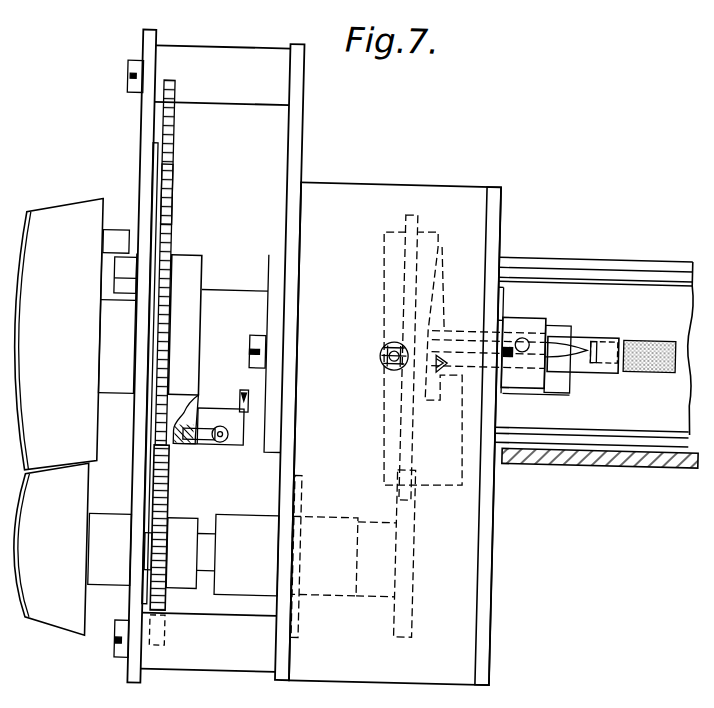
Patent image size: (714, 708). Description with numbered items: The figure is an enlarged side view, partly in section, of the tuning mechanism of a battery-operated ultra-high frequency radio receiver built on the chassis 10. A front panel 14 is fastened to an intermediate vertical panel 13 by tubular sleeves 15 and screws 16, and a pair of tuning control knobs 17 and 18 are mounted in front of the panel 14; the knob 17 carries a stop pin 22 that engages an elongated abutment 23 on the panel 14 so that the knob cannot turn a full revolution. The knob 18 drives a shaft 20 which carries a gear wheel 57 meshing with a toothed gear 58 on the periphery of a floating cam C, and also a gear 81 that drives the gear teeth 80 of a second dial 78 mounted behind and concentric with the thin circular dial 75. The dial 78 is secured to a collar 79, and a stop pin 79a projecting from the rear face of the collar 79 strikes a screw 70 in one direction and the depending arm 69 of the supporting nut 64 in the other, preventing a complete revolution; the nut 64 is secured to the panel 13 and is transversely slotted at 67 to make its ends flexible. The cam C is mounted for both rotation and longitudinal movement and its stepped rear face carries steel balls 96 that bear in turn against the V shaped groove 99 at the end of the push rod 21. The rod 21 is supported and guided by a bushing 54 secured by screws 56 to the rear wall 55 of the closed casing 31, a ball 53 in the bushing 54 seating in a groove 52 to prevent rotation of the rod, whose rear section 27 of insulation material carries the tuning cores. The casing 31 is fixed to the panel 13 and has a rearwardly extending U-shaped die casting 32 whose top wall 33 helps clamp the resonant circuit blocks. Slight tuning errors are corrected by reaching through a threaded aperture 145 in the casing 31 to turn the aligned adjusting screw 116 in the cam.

The chassis 10 is at (577, 448).
The intermediate vertical panel 13 is at (302, 138).
The front panel 14 is at (146, 154).
The tubular sleeve 15 is at (213, 50).
The screw 16 is at (131, 63).
The tuning control knob 17 is at (54, 211).
The tuning control knob 18 is at (63, 621).
The shaft 20 is at (218, 560).
The push rod 21 is at (592, 356).
The stop pin 22 is at (120, 235).
The elongated abutment 23 is at (125, 267).
The rear section of the rod 27 is at (649, 329).
The closed casing 31 is at (430, 180).
The die casting 32 is at (575, 244).
The top wall 33 is at (638, 251).
The groove 52 is at (576, 334).
The ball 53 is at (531, 317).
The bushing 54 is at (525, 367).
The rear wall 55 is at (502, 588).
The screw 56 is at (515, 374).
The gear wheel 57 is at (416, 622).
The toothed gear 58 is at (415, 210).
The supporting nut 64 is at (251, 292).
The transverse slot 67 is at (250, 396).
The depending arm 69 is at (249, 436).
The screw 70 is at (236, 434).
The circular dial 75 is at (157, 144).
The second dial 78 is at (181, 123).
The collar 79 is at (196, 255).
The stop pin 79a is at (214, 432).
The gear teeth 80 is at (180, 174).
The gear 81 is at (182, 486).
The steel ball 96 is at (446, 357).
The V shaped groove 99 is at (450, 349).
The adjusting screw 116 is at (407, 348).
The threaded aperture 145 is at (398, 346).
The floating cam C is at (450, 241).